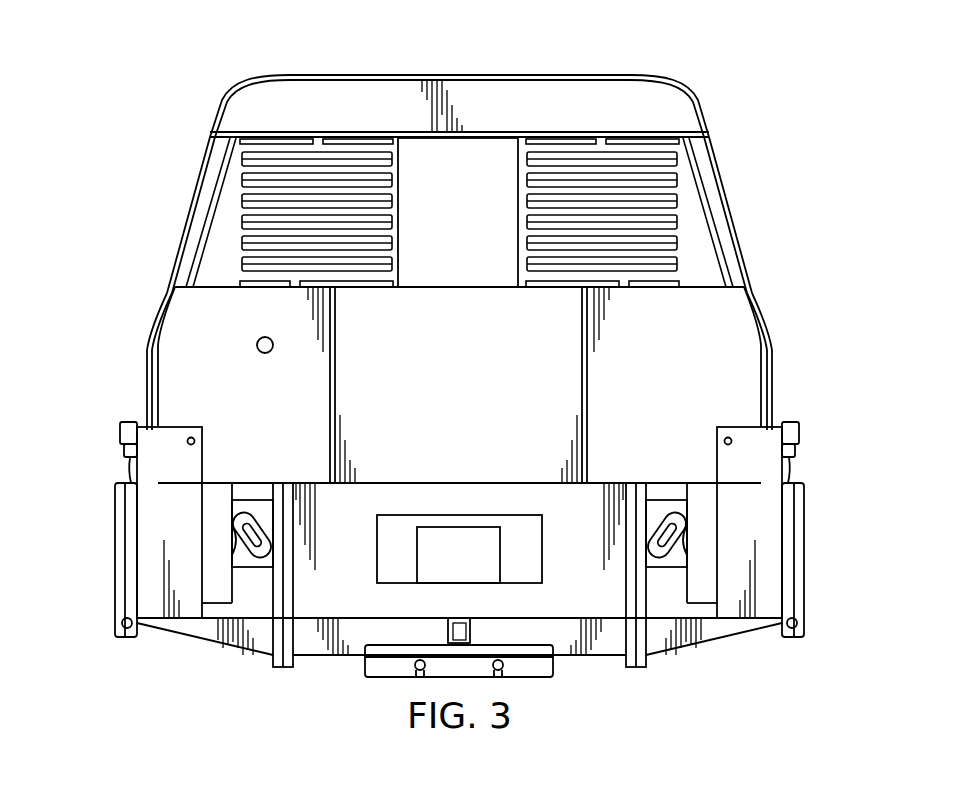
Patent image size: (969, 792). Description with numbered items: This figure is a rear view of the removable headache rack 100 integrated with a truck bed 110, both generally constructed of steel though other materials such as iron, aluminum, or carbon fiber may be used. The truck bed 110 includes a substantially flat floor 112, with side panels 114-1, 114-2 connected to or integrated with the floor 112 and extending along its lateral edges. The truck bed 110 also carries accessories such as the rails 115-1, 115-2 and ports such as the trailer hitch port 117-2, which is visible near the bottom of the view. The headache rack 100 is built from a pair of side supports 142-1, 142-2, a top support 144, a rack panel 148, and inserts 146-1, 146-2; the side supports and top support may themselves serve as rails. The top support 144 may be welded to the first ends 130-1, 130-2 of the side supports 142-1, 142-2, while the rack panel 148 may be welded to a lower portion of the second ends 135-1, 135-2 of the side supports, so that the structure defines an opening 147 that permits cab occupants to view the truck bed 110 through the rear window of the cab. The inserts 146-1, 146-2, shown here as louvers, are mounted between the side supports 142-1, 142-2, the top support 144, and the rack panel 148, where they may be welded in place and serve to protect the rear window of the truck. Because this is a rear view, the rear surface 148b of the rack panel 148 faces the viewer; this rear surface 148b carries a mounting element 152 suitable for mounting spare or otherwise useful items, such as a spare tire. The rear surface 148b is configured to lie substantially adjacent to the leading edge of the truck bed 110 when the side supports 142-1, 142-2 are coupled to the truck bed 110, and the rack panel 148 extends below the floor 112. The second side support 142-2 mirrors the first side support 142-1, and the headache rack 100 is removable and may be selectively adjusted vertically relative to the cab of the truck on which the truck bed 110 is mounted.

The removable headache rack 100 is at (640, 62).
The truck bed 110 is at (724, 646).
The floor 112 is at (260, 480).
The side panel 114-1 is at (132, 464).
The side panel 114-2 is at (789, 466).
The rail 115-1 is at (120, 433).
The rail 115-2 is at (799, 433).
The trailer hitch port 117-2 is at (470, 630).
The first end of side support 130-1 is at (204, 143).
The first end of side support 130-2 is at (716, 143).
The second end of side support 135-1 is at (160, 304).
The second end of side support 135-2 is at (760, 304).
The side support 142-1 is at (203, 188).
The side support 142-2 is at (714, 188).
The top support 144 is at (573, 114).
The insert 146-1 is at (245, 248).
The insert 146-2 is at (682, 250).
The opening 147 is at (476, 225).
The rack panel 148 is at (476, 395).
The rear surface of rack panel 148b is at (745, 366).
The mounting element 152 is at (272, 352).